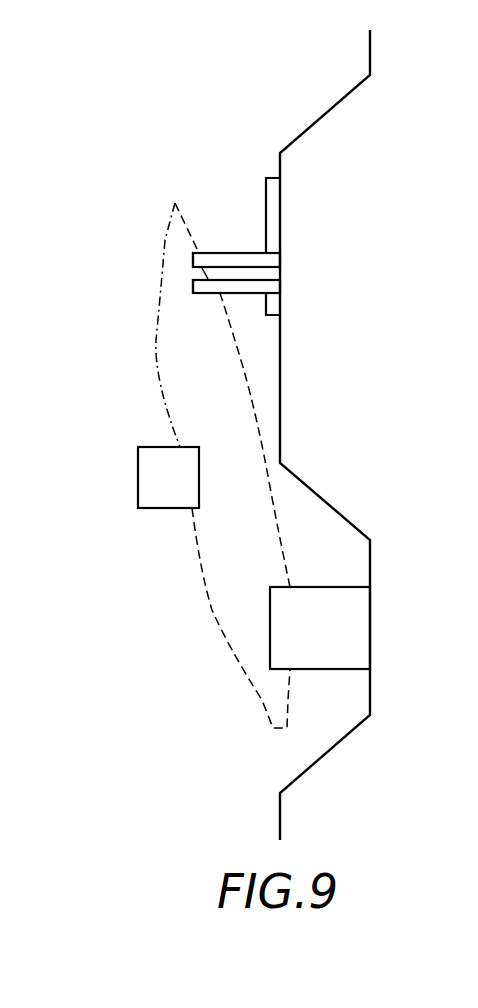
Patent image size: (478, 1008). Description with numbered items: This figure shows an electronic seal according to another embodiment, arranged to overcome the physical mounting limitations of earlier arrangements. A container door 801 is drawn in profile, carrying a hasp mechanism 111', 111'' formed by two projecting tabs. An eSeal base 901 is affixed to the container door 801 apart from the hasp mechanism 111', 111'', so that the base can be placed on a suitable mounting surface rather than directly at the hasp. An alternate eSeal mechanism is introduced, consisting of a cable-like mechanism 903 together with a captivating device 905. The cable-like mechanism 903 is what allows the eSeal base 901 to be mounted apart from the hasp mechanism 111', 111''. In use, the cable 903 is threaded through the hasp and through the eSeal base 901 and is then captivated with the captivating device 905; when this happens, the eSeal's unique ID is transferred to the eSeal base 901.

The container door 801 is at (370, 52).
The eSeal base 901 is at (370, 627).
The cable-like mechanism 903 is at (175, 203).
The captivating device 905 is at (138, 478).
The hasp mechanism 111' is at (220, 304).
The hasp mechanism 111'' is at (201, 259).